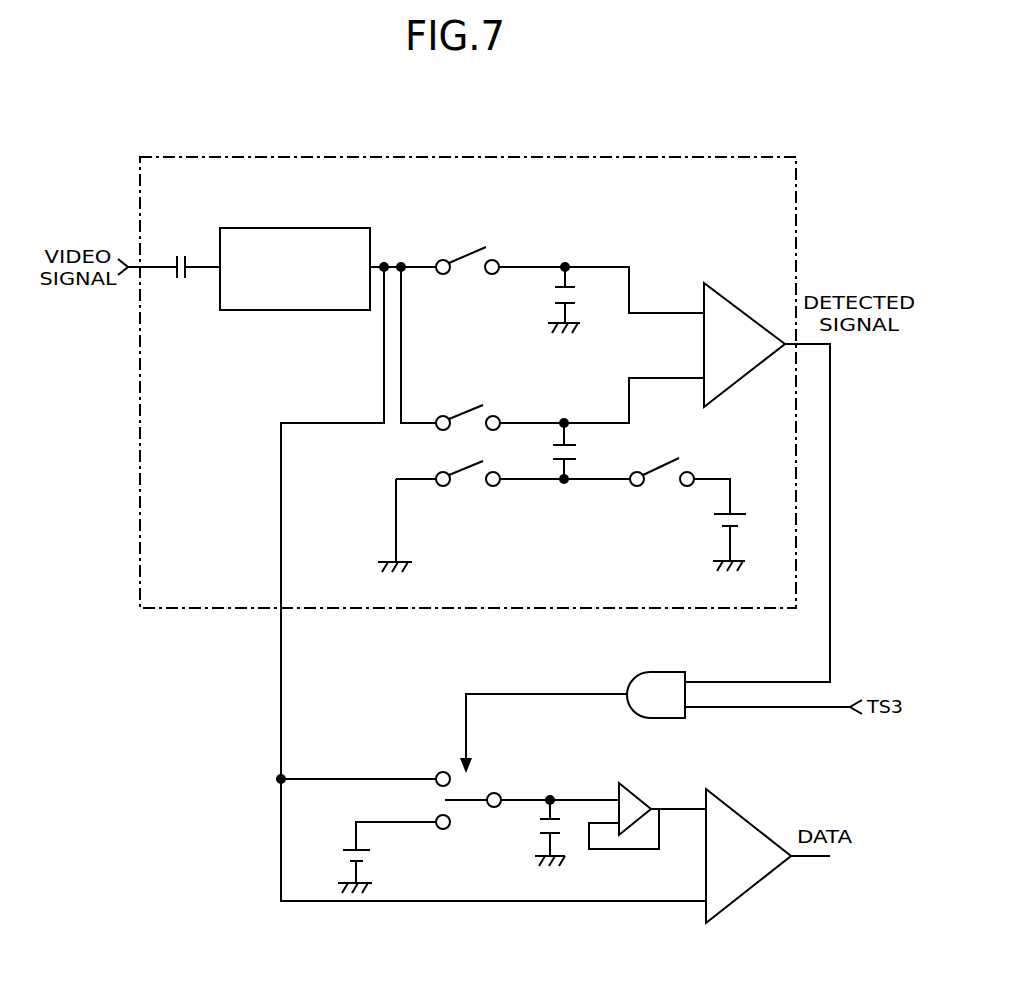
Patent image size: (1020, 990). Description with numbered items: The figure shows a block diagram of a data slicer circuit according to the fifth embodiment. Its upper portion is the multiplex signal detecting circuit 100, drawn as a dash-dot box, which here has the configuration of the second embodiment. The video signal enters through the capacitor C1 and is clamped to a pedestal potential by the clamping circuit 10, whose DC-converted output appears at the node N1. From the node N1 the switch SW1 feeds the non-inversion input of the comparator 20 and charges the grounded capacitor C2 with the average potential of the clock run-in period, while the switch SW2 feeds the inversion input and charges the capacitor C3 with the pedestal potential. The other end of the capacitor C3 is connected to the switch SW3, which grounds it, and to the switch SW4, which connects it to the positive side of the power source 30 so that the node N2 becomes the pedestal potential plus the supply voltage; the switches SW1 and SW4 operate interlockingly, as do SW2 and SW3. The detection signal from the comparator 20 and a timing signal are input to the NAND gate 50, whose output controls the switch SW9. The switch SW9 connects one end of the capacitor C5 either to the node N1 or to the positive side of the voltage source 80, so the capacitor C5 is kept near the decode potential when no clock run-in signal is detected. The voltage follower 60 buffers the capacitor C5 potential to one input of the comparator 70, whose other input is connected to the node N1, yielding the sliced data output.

The multiplex signal detecting circuit 100 is at (493, 157).
The clamping circuit 10 is at (290, 311).
The comparator 20 is at (728, 298).
The power source 30 is at (742, 516).
The NAND gate 50 is at (630, 680).
The voltage follower 60 is at (635, 789).
The comparator 70 is at (734, 797).
The voltage source 80 is at (372, 852).
The capacitor C1 is at (181, 254).
The capacitor C2 is at (552, 297).
The capacitor C3 is at (580, 447).
The capacitor C5 is at (535, 836).
The node N1 is at (402, 260).
The node N2 is at (564, 420).
The switch SW1 is at (470, 278).
The switch SW2 is at (474, 426).
The switch SW3 is at (472, 482).
The switch SW4 is at (668, 483).
The switch SW9 is at (475, 784).